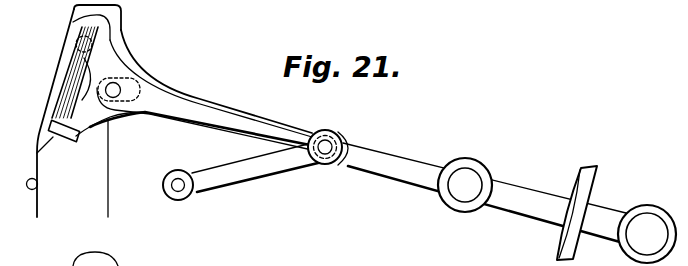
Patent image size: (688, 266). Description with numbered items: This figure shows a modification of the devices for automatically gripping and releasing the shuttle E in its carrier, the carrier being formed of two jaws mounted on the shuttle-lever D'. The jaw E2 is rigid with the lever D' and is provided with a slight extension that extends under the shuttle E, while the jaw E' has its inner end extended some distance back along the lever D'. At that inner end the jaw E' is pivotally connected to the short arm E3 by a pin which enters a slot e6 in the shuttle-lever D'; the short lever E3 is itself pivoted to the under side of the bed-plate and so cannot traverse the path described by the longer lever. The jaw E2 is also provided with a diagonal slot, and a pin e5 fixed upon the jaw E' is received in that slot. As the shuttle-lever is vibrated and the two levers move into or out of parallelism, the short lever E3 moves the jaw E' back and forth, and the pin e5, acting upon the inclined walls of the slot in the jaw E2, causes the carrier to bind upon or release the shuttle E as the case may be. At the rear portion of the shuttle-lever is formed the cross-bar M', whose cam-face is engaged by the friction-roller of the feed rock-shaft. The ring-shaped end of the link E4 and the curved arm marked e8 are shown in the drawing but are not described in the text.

The shuttle E is at (74, 72).
The jaw E' is at (89, 135).
The jaw E2 is at (87, 123).
The short lever E3 is at (255, 172).
The link end ring E4 is at (178, 175).
The pin e5 is at (115, 96).
The slot e6 is at (350, 147).
The bracket arm e8 is at (143, 72).
The shuttle-lever D' is at (509, 198).
The cross-bar M' is at (588, 213).